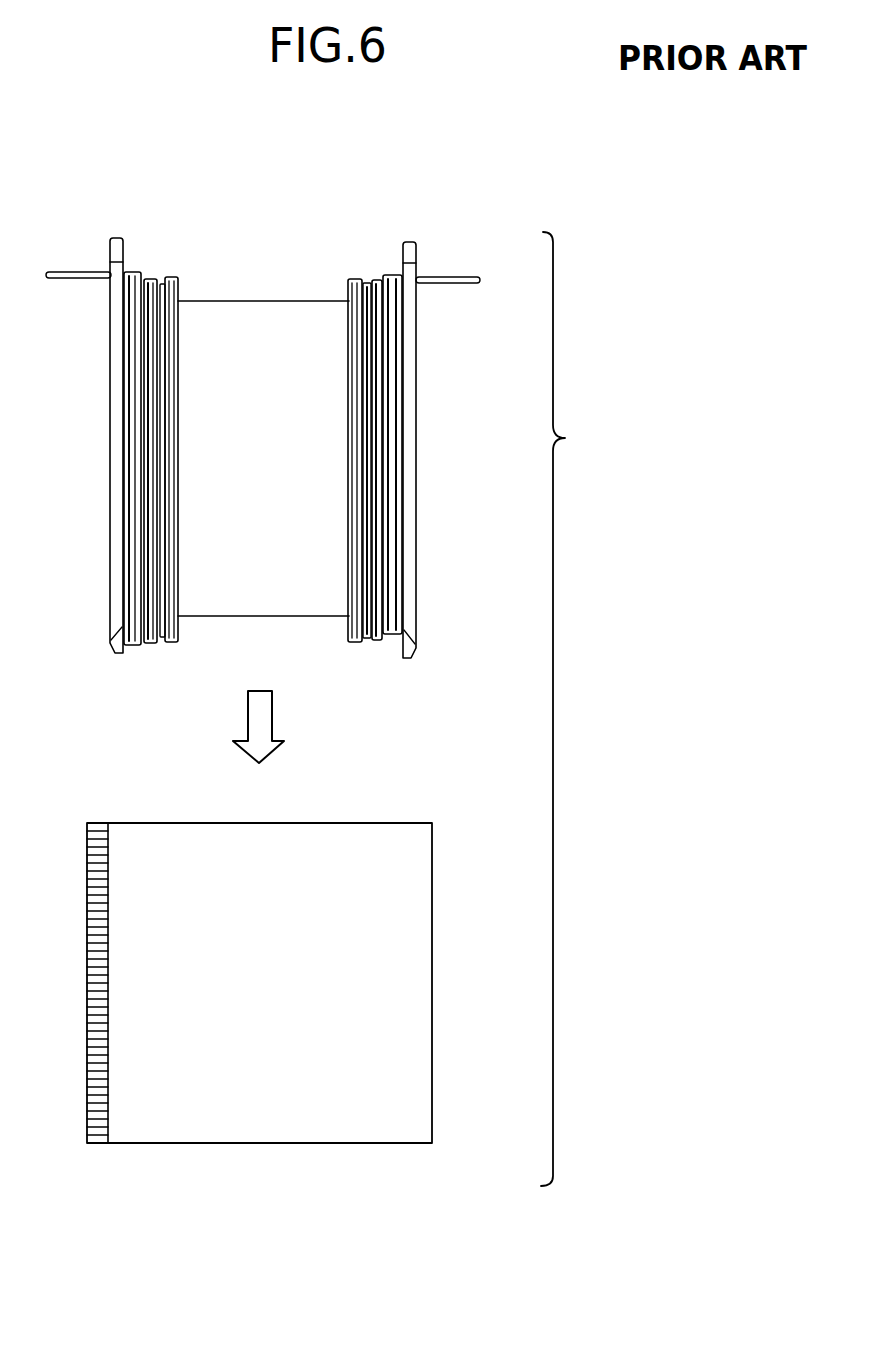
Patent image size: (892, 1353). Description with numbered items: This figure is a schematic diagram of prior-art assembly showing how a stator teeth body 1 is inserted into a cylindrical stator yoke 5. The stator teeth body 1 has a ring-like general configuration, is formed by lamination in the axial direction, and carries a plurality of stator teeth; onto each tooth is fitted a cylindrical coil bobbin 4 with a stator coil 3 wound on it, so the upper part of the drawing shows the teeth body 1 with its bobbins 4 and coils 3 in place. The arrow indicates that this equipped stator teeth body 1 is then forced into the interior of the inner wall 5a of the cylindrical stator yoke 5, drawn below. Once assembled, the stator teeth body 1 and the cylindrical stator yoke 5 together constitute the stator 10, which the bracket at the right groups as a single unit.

The stator teeth body 1 is at (280, 301).
The stator coil 3 is at (140, 272).
The coil bobbin 4 is at (111, 490).
The cylindrical stator yoke 5 is at (98, 1125).
The inner wall 5a is at (110, 862).
The stator 10 is at (572, 709).